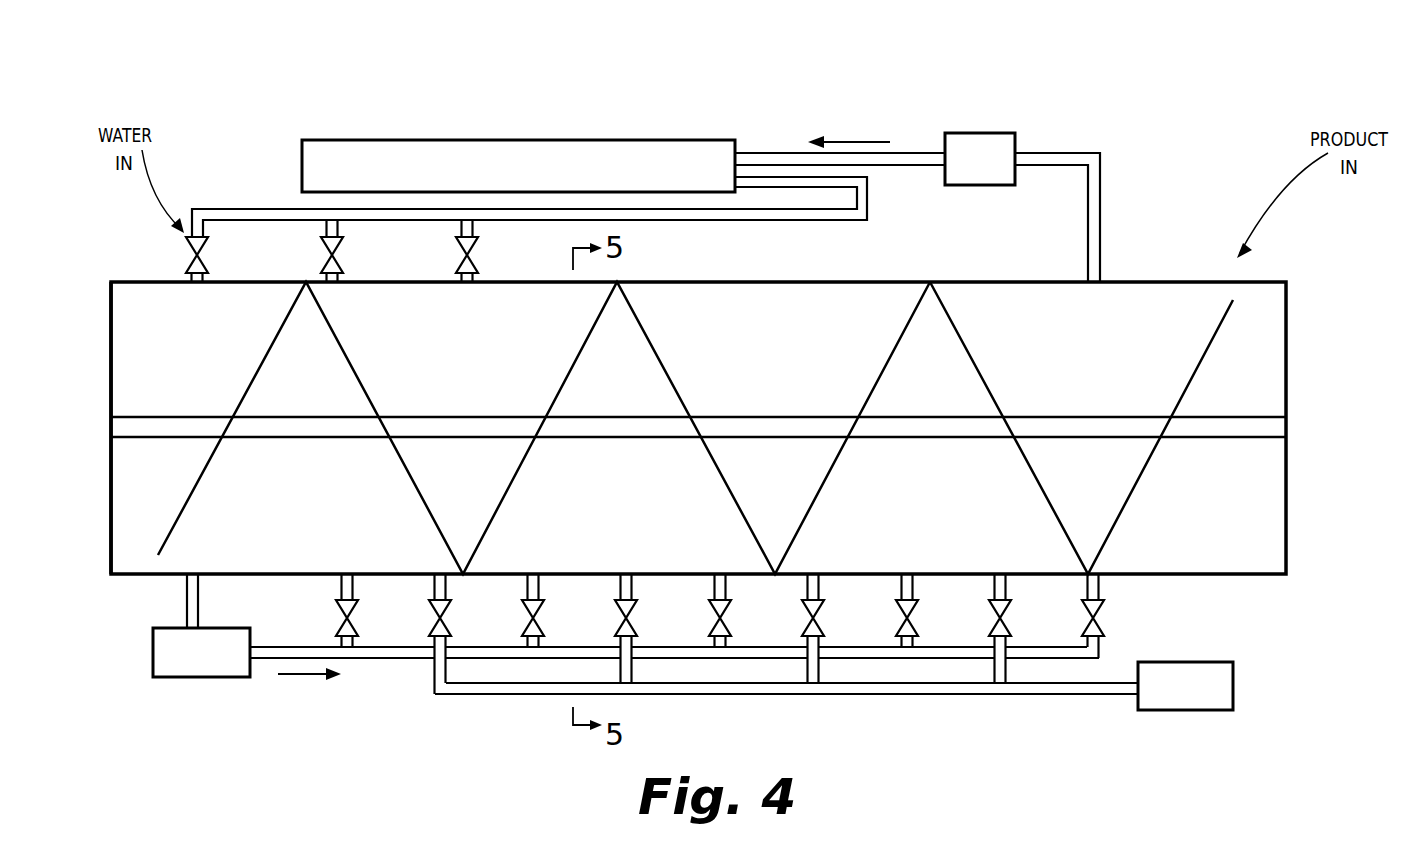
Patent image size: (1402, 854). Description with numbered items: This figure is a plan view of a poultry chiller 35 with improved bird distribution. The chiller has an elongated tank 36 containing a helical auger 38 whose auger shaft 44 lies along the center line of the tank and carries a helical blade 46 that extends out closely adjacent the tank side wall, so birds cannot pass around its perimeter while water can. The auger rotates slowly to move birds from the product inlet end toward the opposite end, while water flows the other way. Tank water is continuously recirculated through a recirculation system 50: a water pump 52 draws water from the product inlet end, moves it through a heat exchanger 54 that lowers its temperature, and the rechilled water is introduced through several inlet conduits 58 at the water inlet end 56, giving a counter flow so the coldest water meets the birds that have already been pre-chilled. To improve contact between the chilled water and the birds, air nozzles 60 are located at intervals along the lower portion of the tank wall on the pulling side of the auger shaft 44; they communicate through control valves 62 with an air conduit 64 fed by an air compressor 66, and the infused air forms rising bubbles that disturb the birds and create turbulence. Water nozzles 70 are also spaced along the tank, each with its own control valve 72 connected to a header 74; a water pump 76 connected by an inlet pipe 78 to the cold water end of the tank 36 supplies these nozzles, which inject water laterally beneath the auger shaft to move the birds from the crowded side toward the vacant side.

The poultry chiller 35 is at (1150, 120).
The elongated tank 36 is at (1268, 372).
The auger 38 is at (655, 341).
The auger shaft 44 is at (778, 416).
The helical blade 46 is at (965, 338).
The recirculation system 50 is at (1105, 193).
The water pump 52 is at (990, 140).
The heat exchanger 54 is at (640, 147).
The water inlet end 56 is at (142, 305).
The inlet conduits 58 is at (327, 231).
The air nozzles 60 is at (460, 588).
The control valves 62 is at (449, 612).
The air conduit 64 is at (893, 697).
The air compressor 66 is at (1205, 708).
The water nozzles 70 is at (358, 587).
The control valve 72 is at (356, 612).
The header 74 is at (403, 660).
The water pump 76 is at (170, 676).
The inlet pipe 78 is at (185, 590).